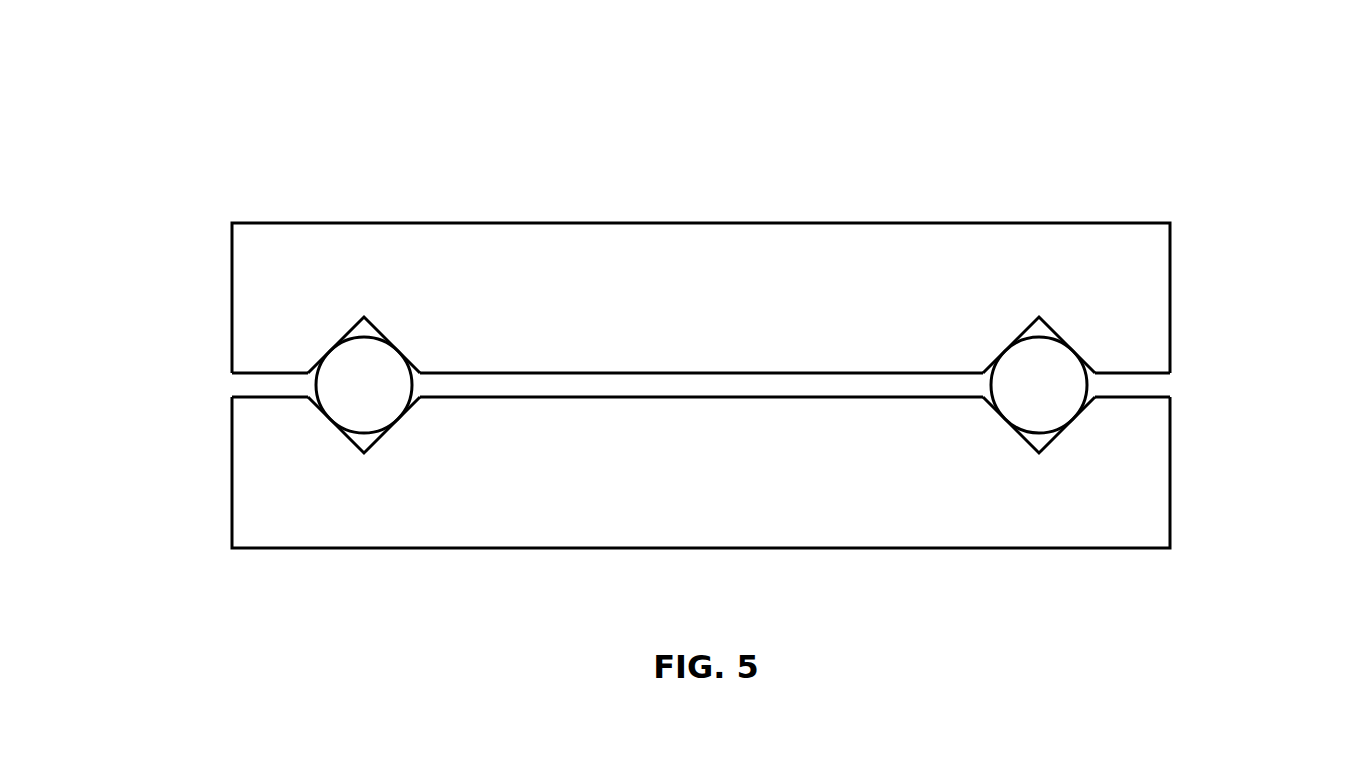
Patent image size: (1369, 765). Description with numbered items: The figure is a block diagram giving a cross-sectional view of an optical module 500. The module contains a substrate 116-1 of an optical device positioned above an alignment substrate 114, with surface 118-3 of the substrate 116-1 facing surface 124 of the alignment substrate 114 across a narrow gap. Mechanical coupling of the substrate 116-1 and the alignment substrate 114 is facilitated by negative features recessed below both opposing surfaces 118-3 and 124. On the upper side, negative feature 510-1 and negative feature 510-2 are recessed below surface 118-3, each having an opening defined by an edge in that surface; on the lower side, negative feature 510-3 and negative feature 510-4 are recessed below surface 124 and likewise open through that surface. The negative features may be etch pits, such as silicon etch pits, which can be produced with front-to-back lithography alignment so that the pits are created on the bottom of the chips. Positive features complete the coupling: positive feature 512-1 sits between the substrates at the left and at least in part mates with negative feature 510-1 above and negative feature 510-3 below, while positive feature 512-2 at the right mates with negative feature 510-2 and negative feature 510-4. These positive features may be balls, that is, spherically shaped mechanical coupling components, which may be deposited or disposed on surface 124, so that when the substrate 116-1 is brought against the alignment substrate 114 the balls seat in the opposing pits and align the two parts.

The optical module 500 is at (986, 117).
The substrate 116-1 is at (701, 298).
The surface 118-3 is at (560, 372).
The alignment substrate 114 is at (701, 472).
The surface 124 is at (598, 398).
The negative feature 510-1 is at (379, 330).
The negative feature 510-2 is at (1024, 330).
The negative feature 510-3 is at (380, 440).
The negative feature 510-4 is at (1023, 440).
The positive feature 512-1 is at (336, 369).
The positive feature 512-2 is at (1055, 370).